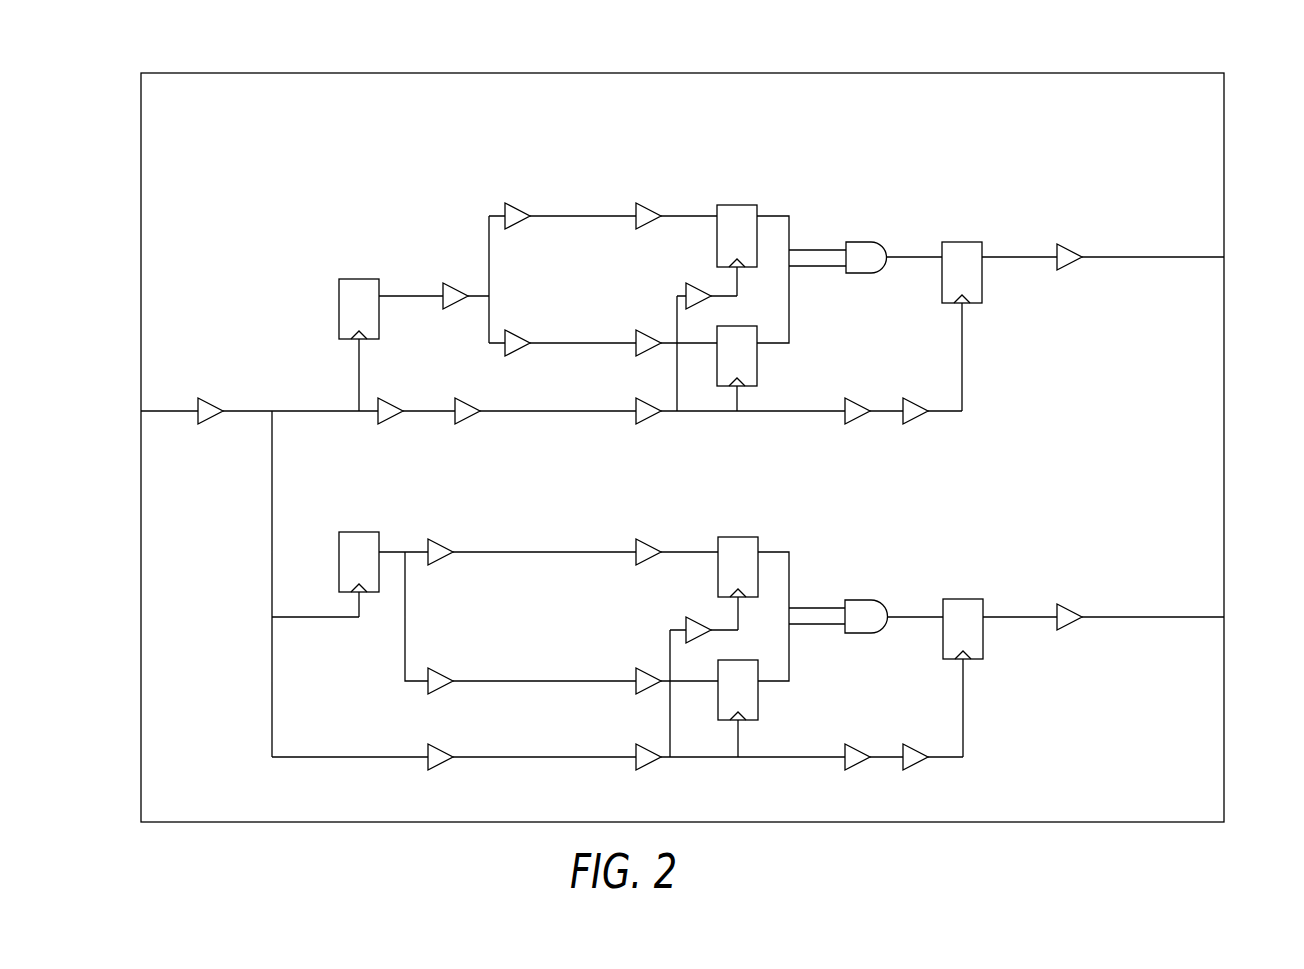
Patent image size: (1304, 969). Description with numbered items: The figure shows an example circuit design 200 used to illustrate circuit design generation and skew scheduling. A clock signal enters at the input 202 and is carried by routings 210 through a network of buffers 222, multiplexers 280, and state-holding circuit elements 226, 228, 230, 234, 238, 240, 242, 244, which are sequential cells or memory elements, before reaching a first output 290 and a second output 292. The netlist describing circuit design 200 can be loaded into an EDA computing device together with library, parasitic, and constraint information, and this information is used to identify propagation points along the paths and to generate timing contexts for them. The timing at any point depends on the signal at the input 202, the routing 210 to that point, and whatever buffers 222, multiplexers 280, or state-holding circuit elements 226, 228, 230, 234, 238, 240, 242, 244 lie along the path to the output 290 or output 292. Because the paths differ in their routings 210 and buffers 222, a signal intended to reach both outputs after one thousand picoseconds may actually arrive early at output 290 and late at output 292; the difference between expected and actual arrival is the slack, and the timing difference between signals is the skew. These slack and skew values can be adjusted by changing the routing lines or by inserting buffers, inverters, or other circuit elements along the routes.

The circuit design 200 is at (97, 112).
The input 202 is at (141, 411).
The routings 210 is at (1144, 259).
The buffers 222 is at (677, 284).
The state-holding circuit element 226 is at (339, 293).
The state-holding circuit element 228 is at (733, 205).
The state-holding circuit element 230 is at (757, 358).
The state-holding circuit element 234 is at (955, 242).
The state-holding circuit element 238 is at (339, 541).
The state-holding circuit element 240 is at (758, 703).
The state-holding circuit element 242 is at (722, 537).
The state-holding circuit element 244 is at (958, 599).
The multiplexers 280 is at (857, 242).
The output 290 is at (1227, 257).
The output 292 is at (1227, 620).